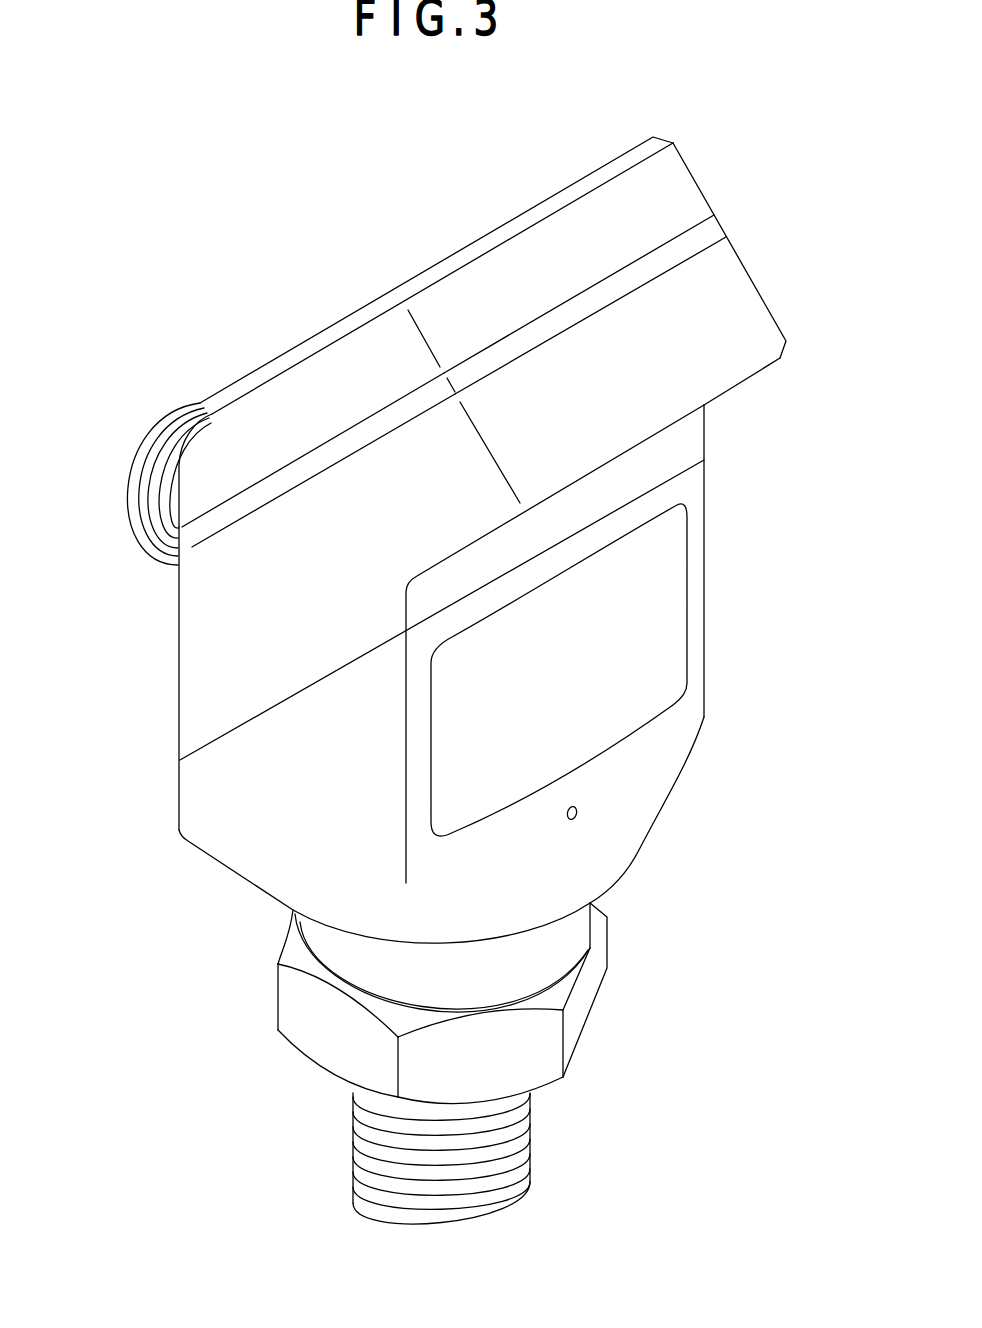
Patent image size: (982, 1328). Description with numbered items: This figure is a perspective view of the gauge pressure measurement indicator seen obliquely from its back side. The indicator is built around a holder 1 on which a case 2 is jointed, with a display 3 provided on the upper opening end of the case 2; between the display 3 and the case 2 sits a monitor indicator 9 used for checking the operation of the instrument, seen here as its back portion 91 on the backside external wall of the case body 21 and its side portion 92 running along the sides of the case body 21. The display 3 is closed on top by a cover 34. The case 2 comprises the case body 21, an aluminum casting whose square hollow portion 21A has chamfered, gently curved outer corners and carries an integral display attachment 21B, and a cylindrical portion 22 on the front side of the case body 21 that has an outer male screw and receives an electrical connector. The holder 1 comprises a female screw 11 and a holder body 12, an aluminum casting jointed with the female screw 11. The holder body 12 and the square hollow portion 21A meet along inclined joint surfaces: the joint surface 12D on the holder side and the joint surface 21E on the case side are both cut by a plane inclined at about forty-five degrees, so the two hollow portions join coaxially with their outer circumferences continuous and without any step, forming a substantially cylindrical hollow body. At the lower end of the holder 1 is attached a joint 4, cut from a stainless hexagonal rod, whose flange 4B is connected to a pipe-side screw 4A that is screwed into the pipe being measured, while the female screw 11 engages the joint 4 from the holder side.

The holder 1 is at (688, 844).
The case 2 is at (146, 672).
The display 3 is at (608, 142).
The joint 4 is at (585, 1017).
The pipe-side screw 4A is at (507, 1187).
The flange 4B is at (315, 1047).
The monitor indicator 9 is at (688, 222).
The female screw 11 is at (565, 938).
The holder body 12 is at (231, 838).
The joint surface 12D is at (312, 683).
The case body 21 is at (190, 603).
The square hollow portion 21A is at (188, 716).
The display attachment 21B is at (733, 368).
The joint surface 21E is at (268, 710).
The cylindrical portion 22 is at (153, 527).
The cover 34 is at (520, 255).
The back portion 91 is at (570, 318).
The side portion 92 is at (328, 458).